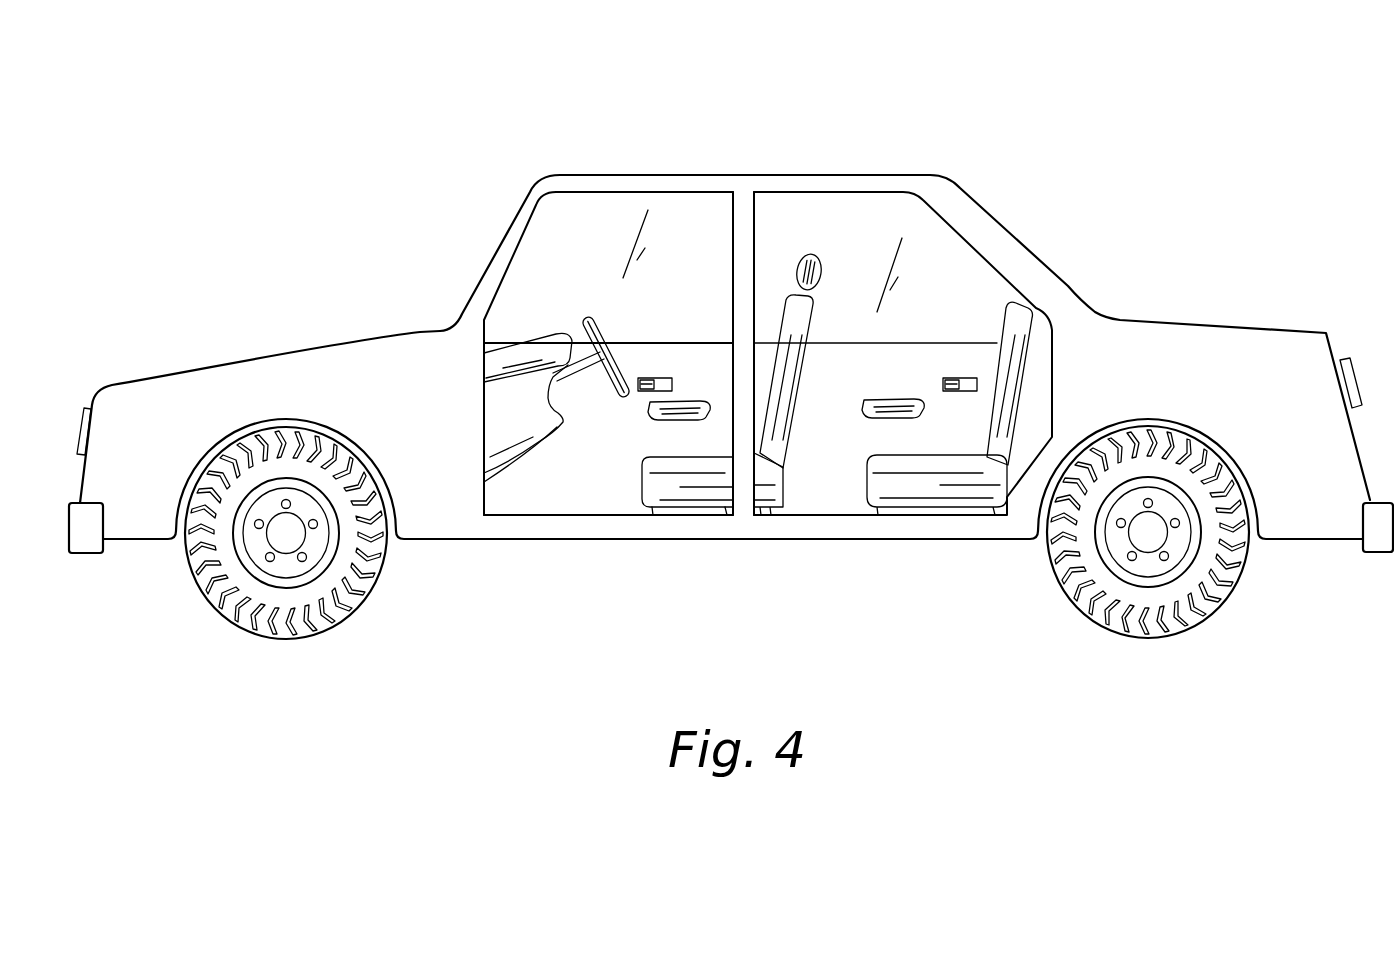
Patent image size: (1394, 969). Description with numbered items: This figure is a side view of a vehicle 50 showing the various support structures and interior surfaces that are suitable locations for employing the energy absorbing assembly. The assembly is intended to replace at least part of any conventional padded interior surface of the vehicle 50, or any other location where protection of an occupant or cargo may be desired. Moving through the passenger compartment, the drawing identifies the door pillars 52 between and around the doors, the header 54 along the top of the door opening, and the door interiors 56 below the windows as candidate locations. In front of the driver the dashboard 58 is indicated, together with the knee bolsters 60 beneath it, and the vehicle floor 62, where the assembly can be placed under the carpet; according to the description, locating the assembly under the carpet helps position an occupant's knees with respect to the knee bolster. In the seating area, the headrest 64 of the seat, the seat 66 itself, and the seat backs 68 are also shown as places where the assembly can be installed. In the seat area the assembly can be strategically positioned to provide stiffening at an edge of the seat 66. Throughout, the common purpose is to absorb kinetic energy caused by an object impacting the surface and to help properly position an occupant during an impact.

The vehicle 50 is at (1090, 115).
The door pillars 52 is at (733, 232).
The header 54 is at (567, 200).
The door interiors 56 is at (683, 348).
The dashboard 58 is at (545, 332).
The knee bolsters 60 is at (565, 423).
The vehicle floor 62 is at (565, 502).
The headrest 64 is at (794, 258).
The seat 66 is at (942, 452).
The seat backs 68 is at (807, 370).